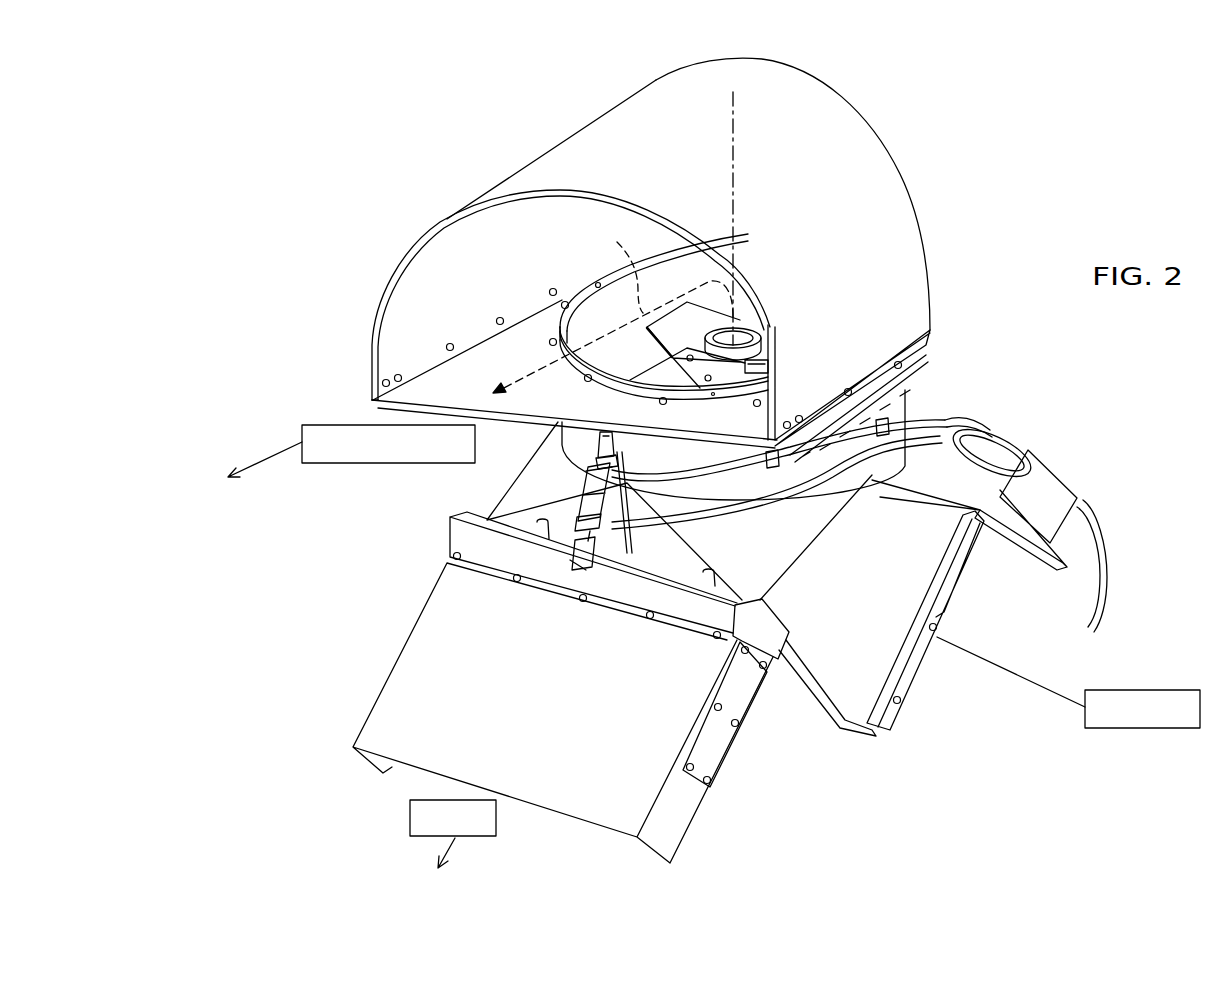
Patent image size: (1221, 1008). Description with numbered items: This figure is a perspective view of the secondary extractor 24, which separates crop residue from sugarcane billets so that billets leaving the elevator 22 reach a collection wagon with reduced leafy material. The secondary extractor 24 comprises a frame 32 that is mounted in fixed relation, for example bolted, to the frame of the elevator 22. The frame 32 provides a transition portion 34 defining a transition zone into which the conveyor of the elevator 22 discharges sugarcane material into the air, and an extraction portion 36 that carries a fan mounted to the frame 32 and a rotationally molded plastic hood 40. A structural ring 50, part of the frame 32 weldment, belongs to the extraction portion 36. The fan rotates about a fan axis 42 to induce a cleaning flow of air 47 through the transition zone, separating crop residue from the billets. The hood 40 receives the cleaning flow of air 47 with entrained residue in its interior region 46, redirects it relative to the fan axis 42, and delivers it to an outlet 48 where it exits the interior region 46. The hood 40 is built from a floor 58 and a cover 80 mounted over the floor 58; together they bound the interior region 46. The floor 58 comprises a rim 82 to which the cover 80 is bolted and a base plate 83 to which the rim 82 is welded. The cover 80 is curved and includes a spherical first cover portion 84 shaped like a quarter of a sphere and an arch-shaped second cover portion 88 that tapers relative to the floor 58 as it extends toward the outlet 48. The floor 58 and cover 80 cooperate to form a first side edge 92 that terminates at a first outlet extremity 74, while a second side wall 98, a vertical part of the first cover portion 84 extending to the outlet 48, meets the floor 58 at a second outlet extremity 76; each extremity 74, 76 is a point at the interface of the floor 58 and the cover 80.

The elevator 22 is at (1178, 688).
The secondary extractor 24 is at (972, 218).
The frame 32 is at (861, 555).
The transition portion 34 is at (813, 602).
The extraction portion 36 is at (961, 317).
The hood 40 is at (444, 153).
The fan axis 42 is at (736, 167).
The interior region 46 is at (480, 247).
The cleaning flow of air 47 is at (617, 268).
The outlet 48 is at (393, 288).
The structural ring 50 is at (785, 480).
The floor 58 is at (510, 357).
The first outlet extremity 74 is at (405, 398).
The second outlet extremity 76 is at (772, 434).
The cover 80 is at (575, 133).
The rim 82 is at (923, 345).
The base plate 83 is at (540, 410).
The first cover portion 84 is at (862, 158).
The second cover portion 88 is at (650, 107).
The first side edge 92 is at (452, 362).
The second side wall 98 is at (790, 388).